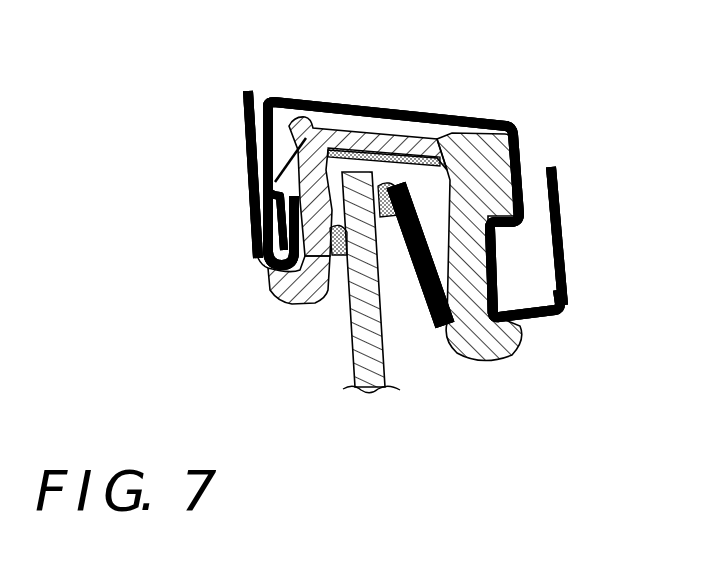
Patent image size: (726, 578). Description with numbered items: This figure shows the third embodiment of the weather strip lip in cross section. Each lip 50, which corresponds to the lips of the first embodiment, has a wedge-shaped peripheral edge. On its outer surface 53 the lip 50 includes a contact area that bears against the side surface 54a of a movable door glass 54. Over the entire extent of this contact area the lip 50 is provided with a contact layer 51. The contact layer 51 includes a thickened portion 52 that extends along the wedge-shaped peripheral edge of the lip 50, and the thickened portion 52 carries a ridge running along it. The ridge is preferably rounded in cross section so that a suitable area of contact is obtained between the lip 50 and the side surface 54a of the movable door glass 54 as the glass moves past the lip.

The lip 50 is at (318, 268).
The contact layer 51 is at (418, 262).
The thickened portion 52 is at (466, 133).
The outer surface 53 is at (323, 231).
The movable door glass 54 is at (368, 393).
The side surface 54a is at (383, 185).